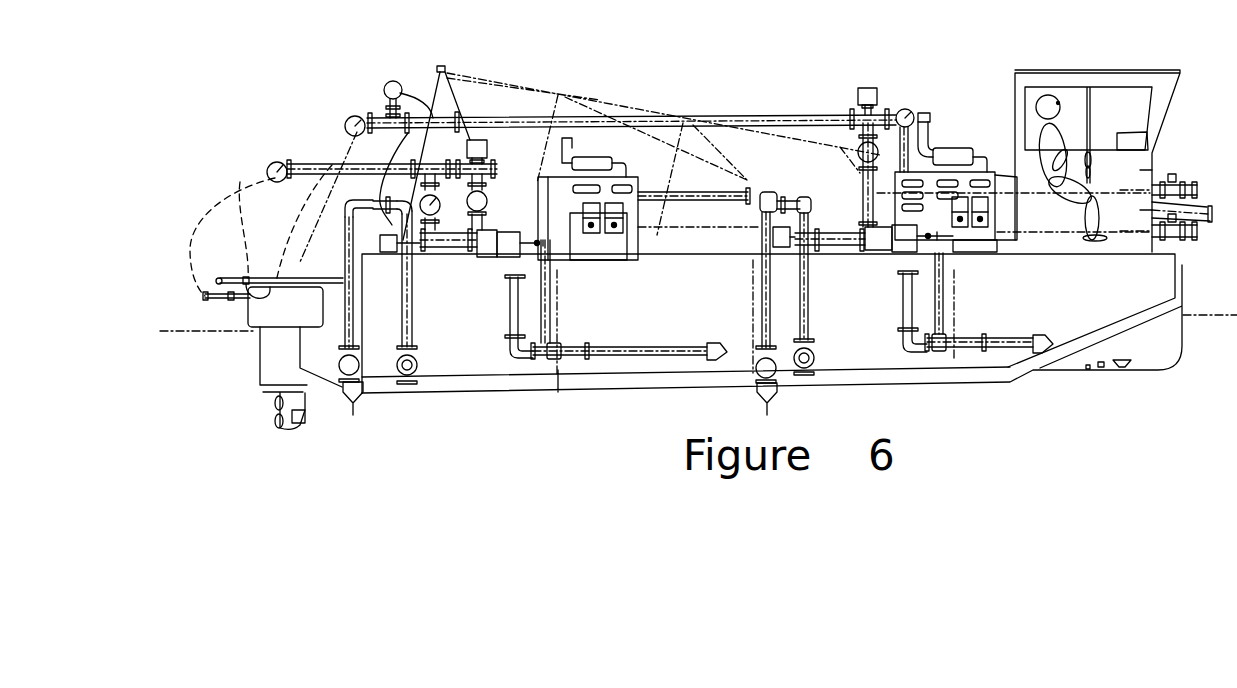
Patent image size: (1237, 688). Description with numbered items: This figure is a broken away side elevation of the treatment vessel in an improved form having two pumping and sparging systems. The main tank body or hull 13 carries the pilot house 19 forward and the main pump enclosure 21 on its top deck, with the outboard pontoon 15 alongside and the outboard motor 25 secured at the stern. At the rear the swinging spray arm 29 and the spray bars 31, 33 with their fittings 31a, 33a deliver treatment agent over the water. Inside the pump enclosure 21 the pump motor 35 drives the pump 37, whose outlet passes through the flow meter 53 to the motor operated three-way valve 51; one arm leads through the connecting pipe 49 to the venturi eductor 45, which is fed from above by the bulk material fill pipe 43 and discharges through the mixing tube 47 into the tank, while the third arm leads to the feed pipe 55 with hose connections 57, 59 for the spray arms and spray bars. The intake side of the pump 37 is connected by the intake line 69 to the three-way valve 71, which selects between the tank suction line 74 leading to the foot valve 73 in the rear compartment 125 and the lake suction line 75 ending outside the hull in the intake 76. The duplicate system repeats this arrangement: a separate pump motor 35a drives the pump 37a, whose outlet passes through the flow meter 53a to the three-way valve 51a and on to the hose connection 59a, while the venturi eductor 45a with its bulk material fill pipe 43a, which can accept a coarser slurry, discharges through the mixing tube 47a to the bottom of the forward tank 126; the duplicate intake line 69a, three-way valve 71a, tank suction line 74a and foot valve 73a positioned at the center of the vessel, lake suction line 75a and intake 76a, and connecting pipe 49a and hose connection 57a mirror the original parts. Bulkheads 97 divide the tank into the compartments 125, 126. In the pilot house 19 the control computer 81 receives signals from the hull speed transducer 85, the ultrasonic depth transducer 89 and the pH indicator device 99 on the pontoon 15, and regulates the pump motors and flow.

The main tank body or hull 13 is at (1183, 282).
The outboard pontoon 15 is at (1140, 320).
The pilot house 19 is at (1075, 73).
The main pump enclosure 21 is at (638, 188).
The outboard motor 25 is at (277, 327).
The swinging spray arm 29 is at (617, 100).
The spray bar 31 is at (237, 264).
The steering arm fitting 31a is at (245, 278).
The spray bar 33 is at (203, 295).
The trim cylinder fitting 33a is at (232, 298).
The pump motor 35 is at (603, 197).
The separate pump motor 35a is at (960, 187).
The pump 37 is at (497, 254).
The pump 37a is at (893, 252).
The bulk material fill pipe 43 is at (552, 304).
The bulk material fill pipe 43a is at (947, 299).
The venturi eductor 45 is at (558, 344).
The venturi eductor 45a is at (950, 338).
The mixing tube 47 is at (687, 347).
The mixing tube 47a is at (1013, 339).
The connecting pipe 49 is at (513, 307).
The second intake pipe 49a is at (903, 303).
The motor operated three-way valve 51 is at (487, 150).
The motor operated three-way valve 51a is at (877, 103).
The flow meter 53 is at (482, 206).
The flow meter 53a is at (832, 158).
The feed pipe 55 is at (414, 163).
The hose connection 57 is at (436, 209).
The ball valve and mast 57a is at (439, 68).
The hose connection 59 is at (277, 168).
The hose connection 59a is at (370, 104).
The intake line 69 is at (452, 249).
The second pump suction pipe 69a is at (818, 253).
The motor operated three-way valve 71 is at (391, 235).
The second strainer 71a is at (781, 248).
The foot valve 73 is at (418, 365).
The foot valve 73a is at (813, 358).
The tank suction line 74 is at (417, 326).
The tank suction line 74a is at (810, 319).
The lake suction line 75 is at (345, 256).
The second intake riser pipe 75a is at (763, 257).
The intake 76 is at (357, 400).
The second hull intake scoop 76a is at (778, 395).
The control computer 81 is at (1117, 133).
The hull speed transducer 85 is at (1124, 360).
The ultrasonic depth transducer 89 is at (1086, 368).
The bulkheads or tank partitions 97 is at (557, 365).
The pH indicator device 99 is at (1101, 367).
The rear tank or rear compartment 125 is at (637, 307).
The forward tank 126 is at (1049, 298).